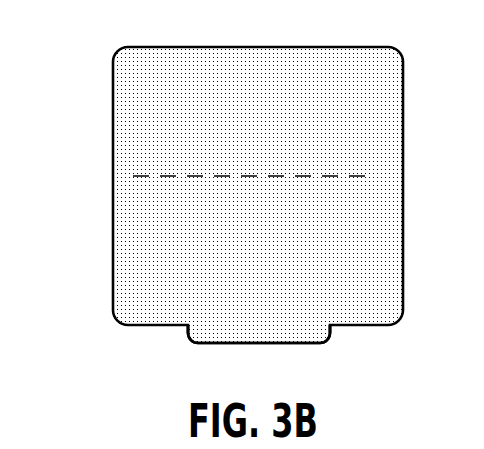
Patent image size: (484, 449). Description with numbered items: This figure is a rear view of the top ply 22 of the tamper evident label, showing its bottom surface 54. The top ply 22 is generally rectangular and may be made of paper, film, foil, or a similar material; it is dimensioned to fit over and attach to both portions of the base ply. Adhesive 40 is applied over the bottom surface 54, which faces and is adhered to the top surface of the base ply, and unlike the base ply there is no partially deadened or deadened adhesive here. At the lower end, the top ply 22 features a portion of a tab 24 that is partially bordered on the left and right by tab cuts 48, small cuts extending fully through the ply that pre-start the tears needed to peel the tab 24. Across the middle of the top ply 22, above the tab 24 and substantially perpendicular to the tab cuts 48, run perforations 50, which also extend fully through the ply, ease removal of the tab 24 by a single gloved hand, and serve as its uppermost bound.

The top ply 22 is at (231, 201).
The adhesive 40 is at (118, 113).
The tab 24 is at (254, 347).
The tab cuts 48 is at (189, 322).
The perforations 50 is at (232, 176).
The bottom surface 54 is at (318, 126).